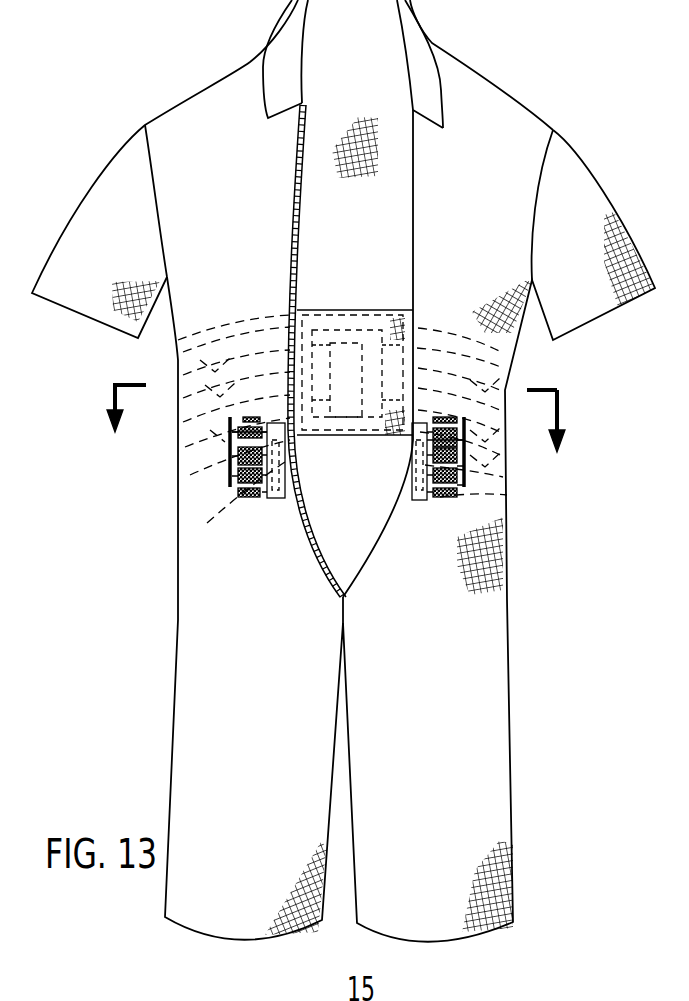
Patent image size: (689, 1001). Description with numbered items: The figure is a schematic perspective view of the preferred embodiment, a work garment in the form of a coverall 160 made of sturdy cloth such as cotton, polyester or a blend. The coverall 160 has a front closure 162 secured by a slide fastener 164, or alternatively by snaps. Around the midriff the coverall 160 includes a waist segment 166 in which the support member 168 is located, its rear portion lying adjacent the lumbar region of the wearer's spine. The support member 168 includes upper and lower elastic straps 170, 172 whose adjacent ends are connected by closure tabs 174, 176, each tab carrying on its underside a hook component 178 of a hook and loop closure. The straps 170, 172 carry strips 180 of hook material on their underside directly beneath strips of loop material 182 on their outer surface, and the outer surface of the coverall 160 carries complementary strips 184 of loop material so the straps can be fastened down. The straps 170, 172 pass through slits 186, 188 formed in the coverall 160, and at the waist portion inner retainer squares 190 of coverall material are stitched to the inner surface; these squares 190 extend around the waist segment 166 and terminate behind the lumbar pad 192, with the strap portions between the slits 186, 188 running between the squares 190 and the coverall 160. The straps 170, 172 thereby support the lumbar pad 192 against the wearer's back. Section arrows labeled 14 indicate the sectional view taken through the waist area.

The coverall 160 is at (527, 97).
The front closure 162 is at (295, 230).
The slide fastener 164 is at (310, 550).
The waist segment 166 is at (503, 455).
The support member 168 is at (178, 456).
The upper elastic strap 170 is at (195, 465).
The lower elastic strap 172 is at (181, 412).
The closure tab 174 is at (273, 498).
The closure tab 176 is at (415, 500).
The hook component 178 is at (278, 463).
The strips of hook material 180 is at (207, 523).
The strips of loop material 182 is at (242, 496).
The complementary strips of loop material 184 is at (235, 430).
The slit 186 is at (232, 415).
The slit 188 is at (222, 470).
The inner retainer squares 190 is at (247, 330).
The lumbar pad 192 is at (350, 308).
The section line 14 is at (336, 423).